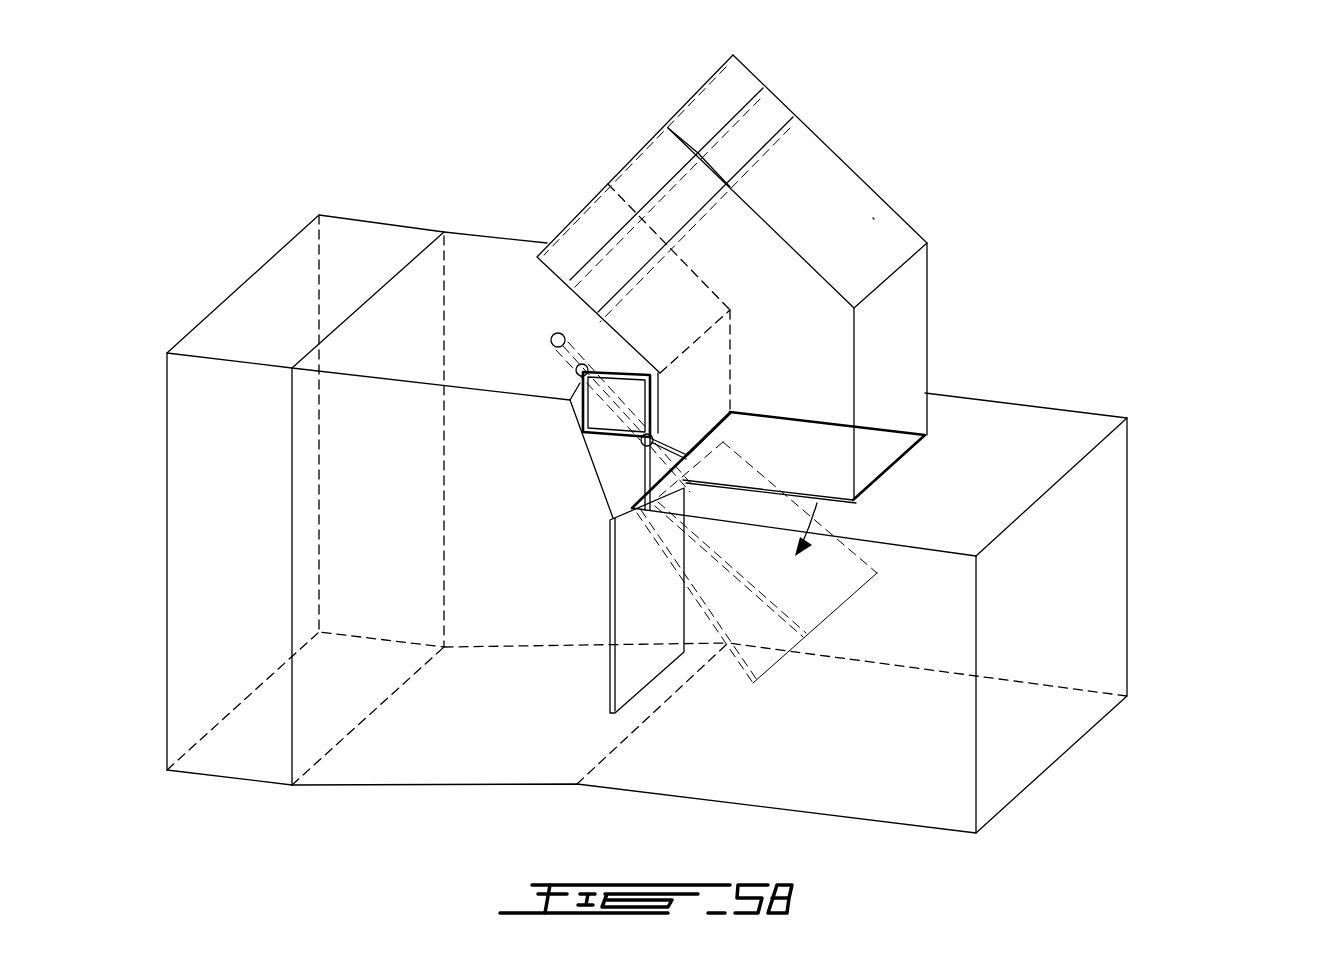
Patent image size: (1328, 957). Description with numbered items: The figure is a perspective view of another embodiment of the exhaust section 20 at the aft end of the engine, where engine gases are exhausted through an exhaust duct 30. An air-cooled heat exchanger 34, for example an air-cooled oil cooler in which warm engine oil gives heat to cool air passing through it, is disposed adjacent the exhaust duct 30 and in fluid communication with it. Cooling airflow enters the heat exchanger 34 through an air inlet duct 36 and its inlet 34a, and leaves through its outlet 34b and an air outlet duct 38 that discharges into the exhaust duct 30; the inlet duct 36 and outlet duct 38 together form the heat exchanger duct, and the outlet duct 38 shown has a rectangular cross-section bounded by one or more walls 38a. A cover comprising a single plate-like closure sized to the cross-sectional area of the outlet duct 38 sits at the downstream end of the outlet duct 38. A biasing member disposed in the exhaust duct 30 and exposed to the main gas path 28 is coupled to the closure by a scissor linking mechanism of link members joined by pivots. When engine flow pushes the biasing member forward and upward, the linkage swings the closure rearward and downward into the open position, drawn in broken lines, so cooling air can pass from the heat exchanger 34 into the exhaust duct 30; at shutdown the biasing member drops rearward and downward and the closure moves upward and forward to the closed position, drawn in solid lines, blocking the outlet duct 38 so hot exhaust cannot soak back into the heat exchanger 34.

The exhaust section 20 is at (1205, 212).
The main gas path 28 is at (250, 735).
The exhaust duct 30 is at (495, 717).
The air-cooled heat exchanger 34 is at (763, 115).
The inlet 34a is at (653, 193).
The outlet 34b is at (703, 207).
The air inlet duct 36 is at (740, 73).
The air outlet duct 38 is at (770, 249).
The wall 38a is at (873, 218).